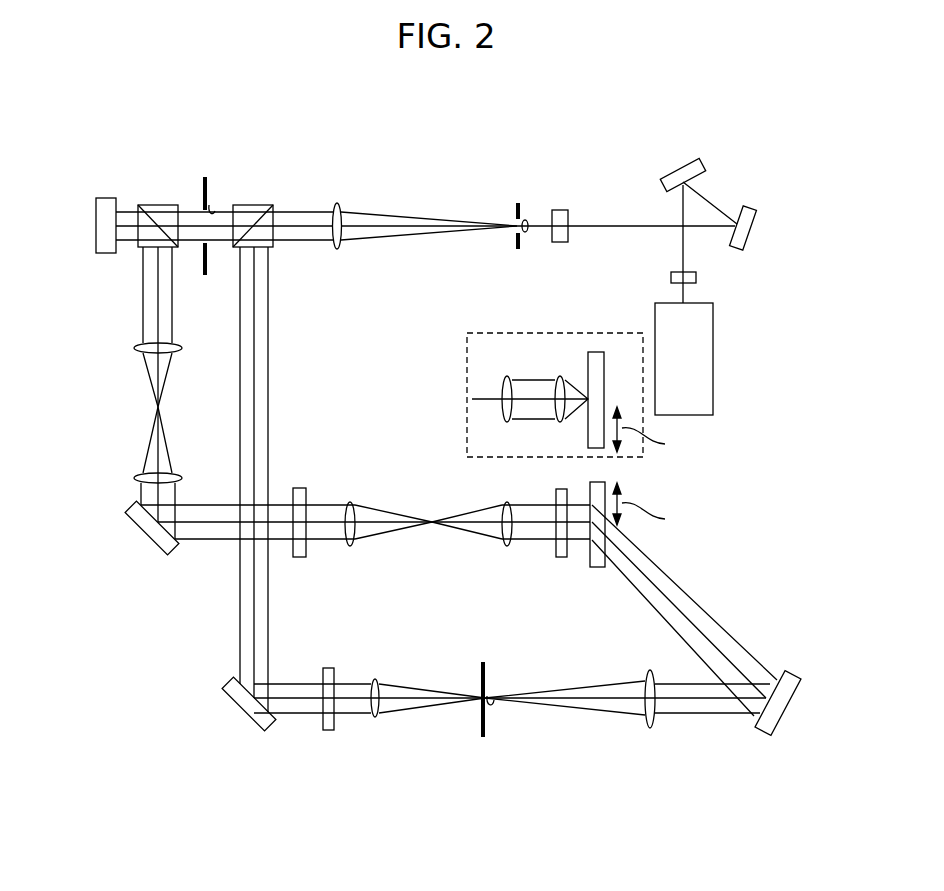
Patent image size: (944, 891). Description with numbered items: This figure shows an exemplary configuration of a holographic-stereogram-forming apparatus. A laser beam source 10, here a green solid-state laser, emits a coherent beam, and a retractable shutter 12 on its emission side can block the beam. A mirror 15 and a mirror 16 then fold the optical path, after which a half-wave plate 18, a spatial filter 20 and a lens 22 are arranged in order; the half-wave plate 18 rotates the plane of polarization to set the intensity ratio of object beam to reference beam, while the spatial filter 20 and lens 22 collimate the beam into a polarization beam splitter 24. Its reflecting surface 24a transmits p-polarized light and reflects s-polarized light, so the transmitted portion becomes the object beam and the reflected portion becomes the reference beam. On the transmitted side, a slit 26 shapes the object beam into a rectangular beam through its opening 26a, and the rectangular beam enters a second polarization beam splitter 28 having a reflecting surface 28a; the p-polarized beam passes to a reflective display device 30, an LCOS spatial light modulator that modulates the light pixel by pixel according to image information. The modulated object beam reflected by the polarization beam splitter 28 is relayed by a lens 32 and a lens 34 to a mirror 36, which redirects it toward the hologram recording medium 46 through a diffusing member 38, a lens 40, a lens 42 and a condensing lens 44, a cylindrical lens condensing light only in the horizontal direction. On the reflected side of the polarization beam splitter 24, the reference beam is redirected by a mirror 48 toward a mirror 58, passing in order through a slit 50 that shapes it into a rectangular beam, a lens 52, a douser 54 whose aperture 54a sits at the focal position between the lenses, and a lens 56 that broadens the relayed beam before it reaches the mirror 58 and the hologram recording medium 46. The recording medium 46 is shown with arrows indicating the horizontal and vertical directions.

The laser beam source 10 is at (710, 350).
The shutter 12 is at (696, 277).
The mirror 15 is at (680, 175).
The mirror 16 is at (745, 229).
The half-wave plate 18 is at (560, 215).
The spatial filter 20 is at (520, 188).
The lens 22 is at (338, 205).
The polarization beam splitter 24 is at (252, 207).
The reflecting surface 24a is at (271, 218).
The slit 26 is at (208, 175).
The aperture 26a is at (213, 211).
The polarization beam splitter 28 is at (148, 212).
The reflecting surface 28a is at (160, 227).
The display device 30 is at (107, 223).
The lens 32 is at (181, 348).
The lens 34 is at (181, 478).
The mirror 36 is at (153, 533).
The diffusing member 38 is at (300, 488).
The lens 40 is at (350, 501).
The lens 42 is at (505, 501).
The condensing lens 44 is at (560, 489).
The hologram recording medium 46 is at (600, 485).
The mirror 48 is at (250, 708).
The slit 50 is at (328, 668).
The lens 52 is at (378, 678).
The douser 54 is at (487, 665).
The aperture 54a is at (494, 700).
The lens 56 is at (648, 668).
The mirror 58 is at (781, 706).